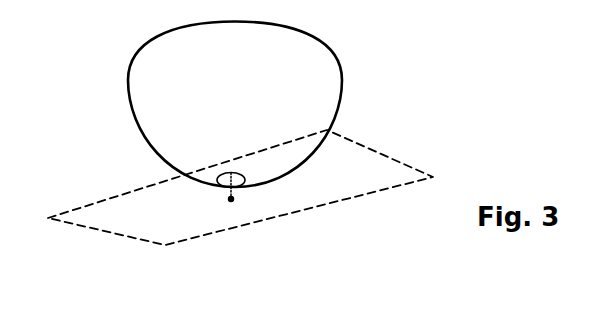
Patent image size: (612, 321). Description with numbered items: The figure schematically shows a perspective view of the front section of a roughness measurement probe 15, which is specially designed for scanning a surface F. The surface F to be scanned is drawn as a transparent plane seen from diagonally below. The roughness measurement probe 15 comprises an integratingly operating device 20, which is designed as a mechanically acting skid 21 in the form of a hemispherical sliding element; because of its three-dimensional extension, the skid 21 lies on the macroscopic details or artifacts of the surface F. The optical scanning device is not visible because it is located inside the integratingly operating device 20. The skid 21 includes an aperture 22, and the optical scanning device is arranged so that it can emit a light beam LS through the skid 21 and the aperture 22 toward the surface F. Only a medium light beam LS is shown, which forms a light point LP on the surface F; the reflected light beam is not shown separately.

The roughness measurement probe 15 is at (56, 44).
The integratingly operating device 20 is at (369, 104).
The skid 21 is at (146, 112).
The aperture 22 is at (242, 184).
The light beam LS is at (224, 189).
The light point LP is at (232, 201).
The surface F is at (135, 237).